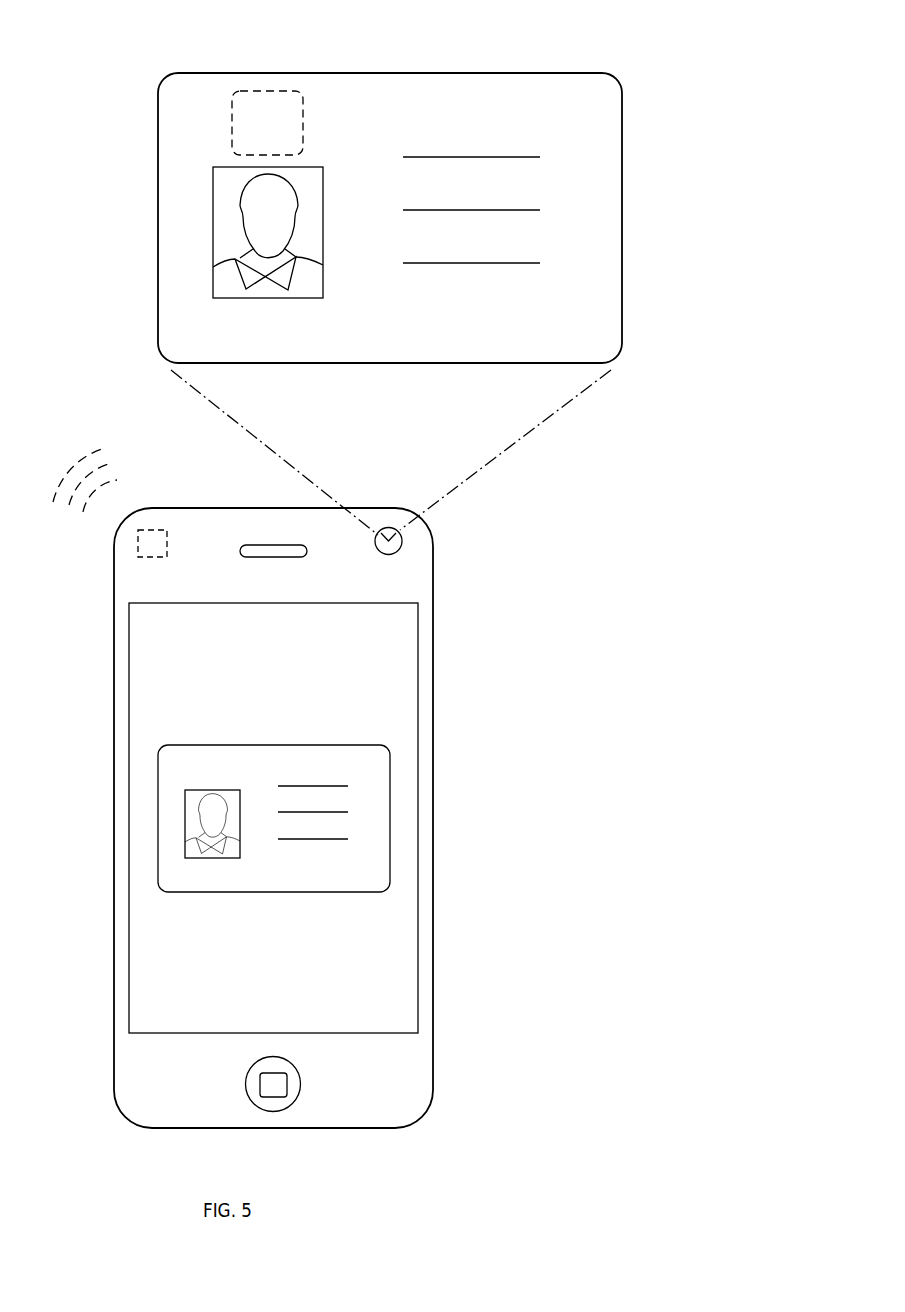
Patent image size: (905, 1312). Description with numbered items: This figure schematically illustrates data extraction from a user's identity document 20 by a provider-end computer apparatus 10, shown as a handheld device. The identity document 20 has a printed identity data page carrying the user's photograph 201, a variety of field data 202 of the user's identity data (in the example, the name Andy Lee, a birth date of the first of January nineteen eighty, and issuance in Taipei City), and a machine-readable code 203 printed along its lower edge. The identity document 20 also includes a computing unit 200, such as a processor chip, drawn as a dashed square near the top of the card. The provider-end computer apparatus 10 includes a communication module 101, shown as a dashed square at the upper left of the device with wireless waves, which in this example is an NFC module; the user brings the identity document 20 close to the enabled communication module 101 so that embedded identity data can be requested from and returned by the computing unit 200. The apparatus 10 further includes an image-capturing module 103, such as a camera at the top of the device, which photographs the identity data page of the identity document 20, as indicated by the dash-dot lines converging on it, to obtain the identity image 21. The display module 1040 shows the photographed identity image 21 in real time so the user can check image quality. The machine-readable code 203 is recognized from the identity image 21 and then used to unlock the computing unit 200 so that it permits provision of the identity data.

The identity document 20 is at (498, 70).
The computing unit 200 is at (259, 95).
The user's photograph 201 is at (225, 208).
The field data 202 is at (545, 124).
The machine-readable code 203 is at (188, 335).
The provider-end computer apparatus 10 is at (120, 707).
The communication module 101 is at (146, 546).
The image-capturing module 103 is at (402, 543).
The display module 1040 is at (135, 852).
The identity image 21 is at (390, 815).